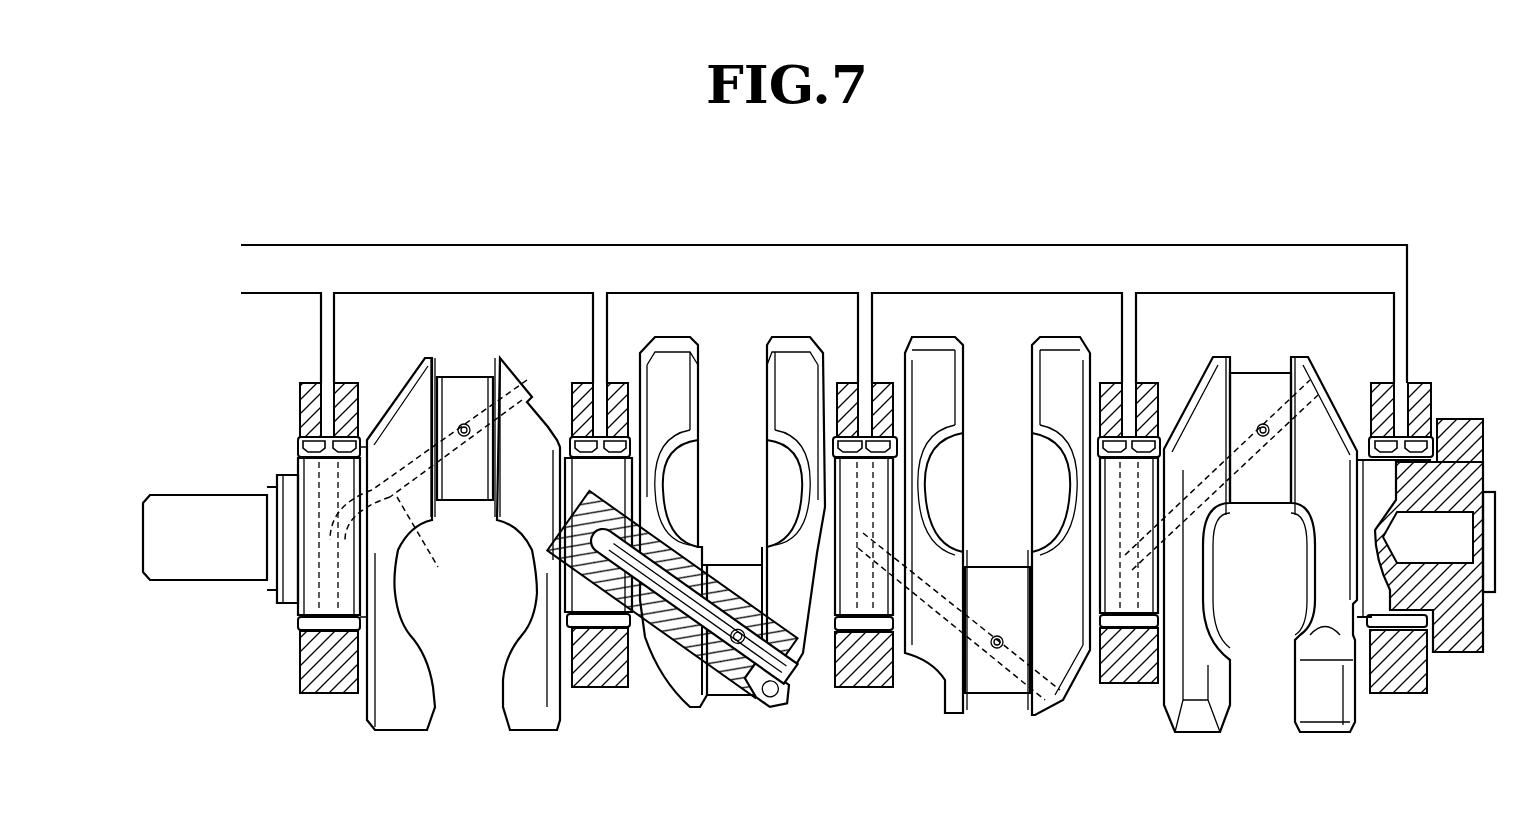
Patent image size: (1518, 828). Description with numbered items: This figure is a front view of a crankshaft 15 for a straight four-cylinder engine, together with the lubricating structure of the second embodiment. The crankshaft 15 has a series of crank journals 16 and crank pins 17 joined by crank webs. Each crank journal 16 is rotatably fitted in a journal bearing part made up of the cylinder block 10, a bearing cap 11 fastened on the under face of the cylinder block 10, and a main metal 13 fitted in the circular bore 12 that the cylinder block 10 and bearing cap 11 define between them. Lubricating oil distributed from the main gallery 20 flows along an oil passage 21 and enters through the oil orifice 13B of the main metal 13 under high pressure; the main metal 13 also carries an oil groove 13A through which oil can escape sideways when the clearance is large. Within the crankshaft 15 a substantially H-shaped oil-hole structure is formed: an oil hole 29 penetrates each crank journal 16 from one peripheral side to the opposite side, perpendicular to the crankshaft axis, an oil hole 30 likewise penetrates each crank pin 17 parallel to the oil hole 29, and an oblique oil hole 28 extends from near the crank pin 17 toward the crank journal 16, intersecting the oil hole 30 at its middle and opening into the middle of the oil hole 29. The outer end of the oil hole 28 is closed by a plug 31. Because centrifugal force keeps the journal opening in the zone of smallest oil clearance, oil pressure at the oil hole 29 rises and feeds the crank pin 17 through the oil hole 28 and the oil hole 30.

The cylinder block 10 is at (300, 400).
The bearing cap 11 is at (303, 675).
The circular bore 12 is at (302, 627).
The main metal 13 is at (317, 462).
The oil groove 13A is at (313, 463).
The oil orifice 13B is at (355, 395).
The crankshaft 15 is at (523, 362).
The crank journal 16 is at (313, 516).
The crank pin 17 is at (461, 372).
The main gallery 20 is at (401, 272).
The oil passage 21 is at (331, 330).
The oil hole 28 is at (449, 493).
The oil hole 29 is at (323, 563).
The oil hole 30 is at (465, 440).
The plug 31 is at (522, 373).